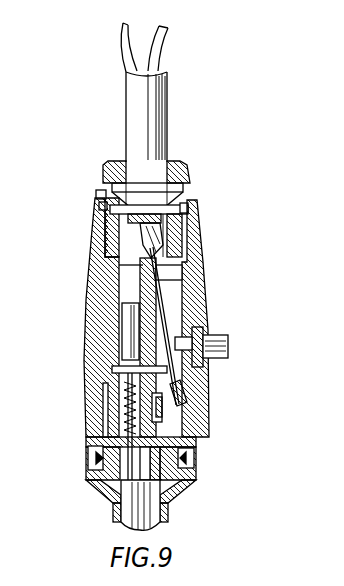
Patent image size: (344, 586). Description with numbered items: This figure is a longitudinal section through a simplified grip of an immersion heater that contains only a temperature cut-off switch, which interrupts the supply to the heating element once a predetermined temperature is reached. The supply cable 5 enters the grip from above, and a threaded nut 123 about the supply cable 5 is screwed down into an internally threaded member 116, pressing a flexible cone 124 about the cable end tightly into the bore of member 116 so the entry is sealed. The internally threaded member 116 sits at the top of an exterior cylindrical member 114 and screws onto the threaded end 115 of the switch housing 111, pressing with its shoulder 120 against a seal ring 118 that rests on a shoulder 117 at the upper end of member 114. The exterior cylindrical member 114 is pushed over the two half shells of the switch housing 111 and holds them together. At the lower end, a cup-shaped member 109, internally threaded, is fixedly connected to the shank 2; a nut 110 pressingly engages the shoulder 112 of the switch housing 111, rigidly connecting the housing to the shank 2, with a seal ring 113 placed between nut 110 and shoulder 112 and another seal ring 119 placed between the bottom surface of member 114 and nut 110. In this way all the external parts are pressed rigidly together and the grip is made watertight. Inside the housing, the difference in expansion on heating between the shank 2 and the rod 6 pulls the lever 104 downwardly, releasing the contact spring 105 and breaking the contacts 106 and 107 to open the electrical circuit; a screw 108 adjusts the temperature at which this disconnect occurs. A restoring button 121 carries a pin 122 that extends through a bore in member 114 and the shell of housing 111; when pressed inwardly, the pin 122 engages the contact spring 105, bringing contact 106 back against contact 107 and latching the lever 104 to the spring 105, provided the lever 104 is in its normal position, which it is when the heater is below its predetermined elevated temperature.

The shank 2 is at (116, 514).
The supply cable 5 is at (153, 107).
The rod 6 is at (97, 485).
The lever 104 is at (112, 369).
The contact spring 105 is at (170, 321).
The contact 106 is at (184, 390).
The contact 107 is at (167, 406).
The screw 108 is at (127, 312).
The cup-shaped member 109 is at (165, 514).
The nut 110 is at (196, 456).
The switch housing 111 is at (106, 268).
The shoulder 112 is at (197, 478).
The seal ring 113 is at (94, 464).
The exterior cylindrical member 114 is at (193, 272).
The threaded end 115 is at (183, 238).
The internally threaded member 116 is at (104, 181).
The shoulder 117 is at (190, 208).
The seal ring 118 is at (99, 205).
The seal ring 119 is at (88, 443).
The shoulder 120 is at (101, 194).
The restoring button 121 is at (215, 352).
The pin 122 is at (203, 340).
The threaded nut 123 is at (174, 162).
The flexible cone 124 is at (186, 192).